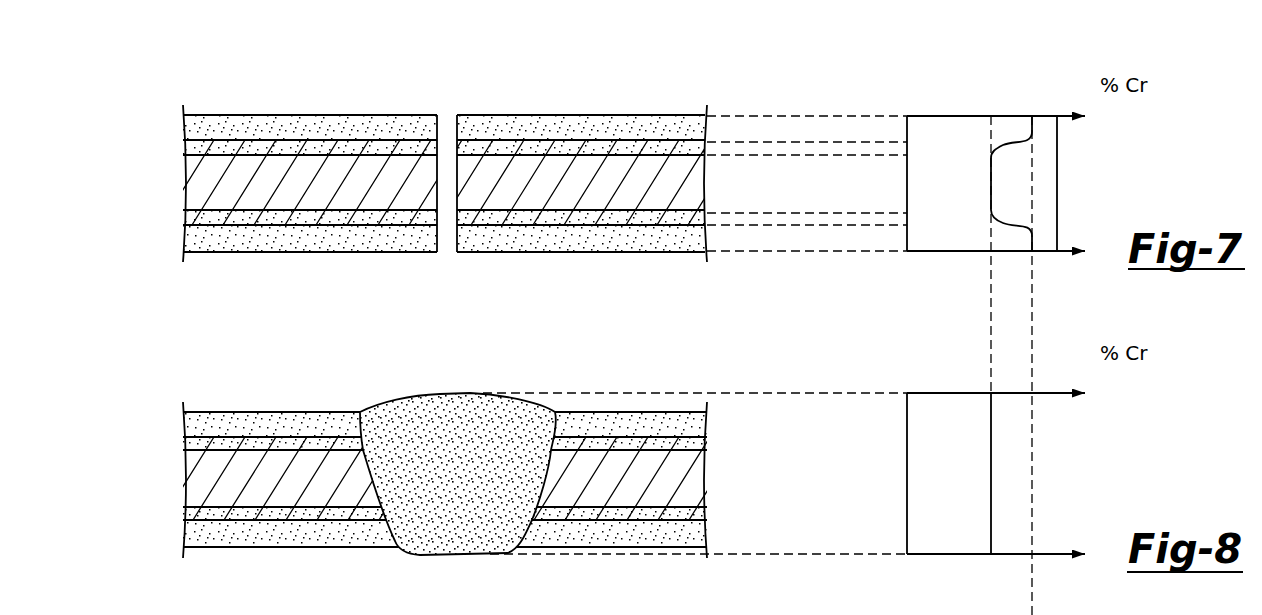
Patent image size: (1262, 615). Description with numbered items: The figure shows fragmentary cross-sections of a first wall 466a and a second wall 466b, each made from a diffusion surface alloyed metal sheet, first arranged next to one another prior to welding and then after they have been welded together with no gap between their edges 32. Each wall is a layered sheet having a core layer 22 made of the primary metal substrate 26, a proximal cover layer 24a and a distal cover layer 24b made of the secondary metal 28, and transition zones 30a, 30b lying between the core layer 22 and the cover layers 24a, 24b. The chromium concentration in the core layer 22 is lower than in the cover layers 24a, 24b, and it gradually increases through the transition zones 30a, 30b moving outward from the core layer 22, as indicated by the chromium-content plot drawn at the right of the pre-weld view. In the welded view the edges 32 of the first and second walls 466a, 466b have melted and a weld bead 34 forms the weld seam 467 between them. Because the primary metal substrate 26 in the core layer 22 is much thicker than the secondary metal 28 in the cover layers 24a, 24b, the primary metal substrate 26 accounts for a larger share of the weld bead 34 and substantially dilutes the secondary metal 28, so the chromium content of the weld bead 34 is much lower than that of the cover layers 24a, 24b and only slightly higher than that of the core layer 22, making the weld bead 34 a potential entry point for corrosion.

In FIG. 7, the core layer 22 is at (182, 192).
In FIG. 8, the core layer 22 is at (182, 487).
In FIG. 7, the proximal cover layer 24a is at (180, 121).
In FIG. 8, the proximal cover layer 24a is at (180, 416).
In FIG. 7, the distal cover layer 24b is at (180, 239).
In FIG. 8, the distal cover layer 24b is at (180, 534).
In FIG. 7, the primary metal substrate 26 is at (218, 167).
In FIG. 8, the primary metal substrate 26 is at (218, 462).
In FIG. 7, the secondary metal 28 is at (233, 128).
In FIG. 8, the secondary metal 28 is at (233, 424).
In FIG. 7, the transition zone 30a is at (181, 147).
In FIG. 8, the transition zone 30a is at (181, 443).
In FIG. 7, the transition zone 30b is at (181, 216).
In FIG. 8, the transition zone 30b is at (181, 512).
In FIG. 7, the edges 32 is at (440, 126).
In FIG. 8, the weld bead 34 is at (457, 427).
In FIG. 7, the first wall 466a is at (317, 100).
In FIG. 8, the first wall 466a is at (307, 401).
In FIG. 7, the second wall 466b is at (577, 100).
In FIG. 8, the second wall 466b is at (628, 391).
In FIG. 8, the weld seam 467 is at (391, 389).